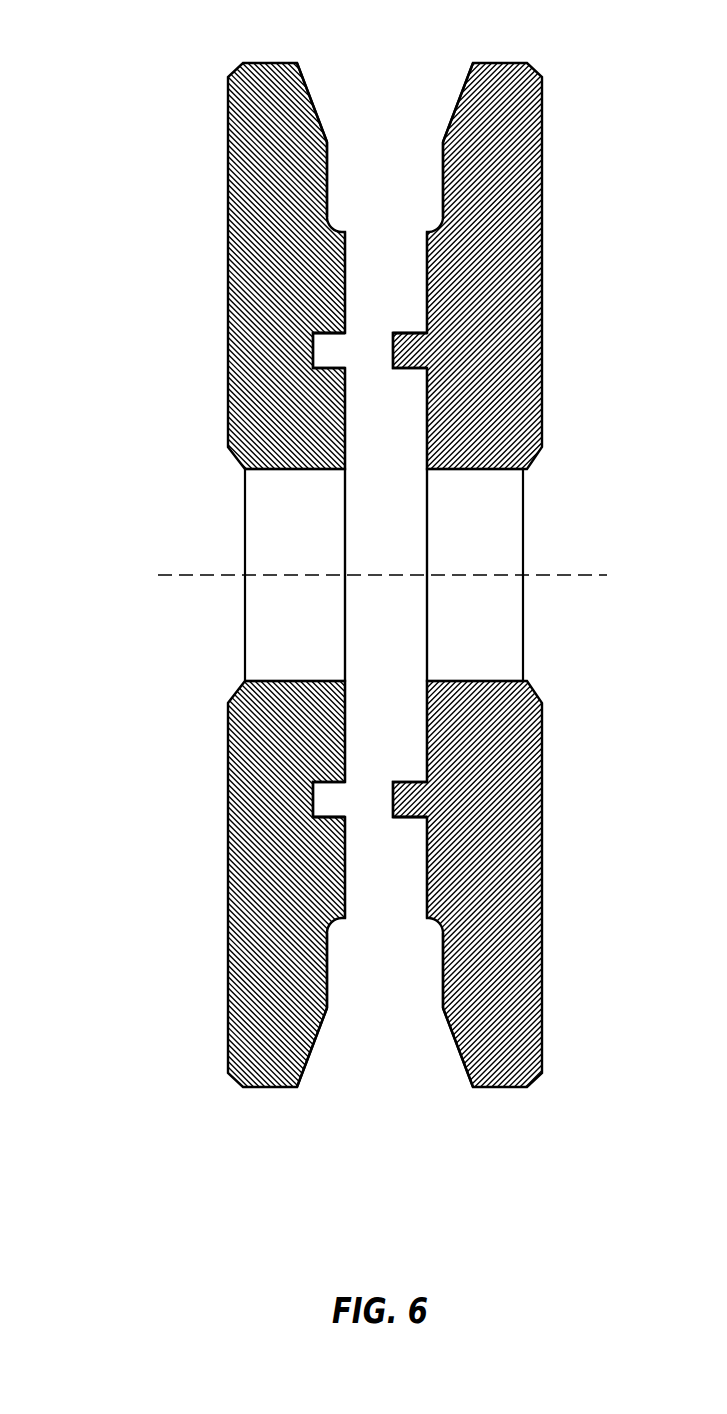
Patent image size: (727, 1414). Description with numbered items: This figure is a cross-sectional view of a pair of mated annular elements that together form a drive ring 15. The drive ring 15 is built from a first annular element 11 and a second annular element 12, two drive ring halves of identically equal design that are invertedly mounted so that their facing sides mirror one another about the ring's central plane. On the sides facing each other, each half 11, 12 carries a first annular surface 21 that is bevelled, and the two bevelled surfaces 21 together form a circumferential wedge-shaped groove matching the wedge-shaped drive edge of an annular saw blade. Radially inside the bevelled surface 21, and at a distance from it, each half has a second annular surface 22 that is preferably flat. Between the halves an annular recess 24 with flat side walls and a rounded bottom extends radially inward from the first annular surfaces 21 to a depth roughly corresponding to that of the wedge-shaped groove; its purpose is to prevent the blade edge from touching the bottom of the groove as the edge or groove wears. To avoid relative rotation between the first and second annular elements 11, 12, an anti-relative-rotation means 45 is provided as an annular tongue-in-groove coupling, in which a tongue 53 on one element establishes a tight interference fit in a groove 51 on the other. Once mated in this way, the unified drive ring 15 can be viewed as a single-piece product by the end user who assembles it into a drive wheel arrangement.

The drive ring 15 is at (130, 220).
The first annular element 11 is at (242, 258).
The second annular element 12 is at (527, 258).
The first annular surface 21 is at (320, 92).
The annular recess 24 is at (340, 192).
The second annular surface 22 is at (348, 250).
The anti-relative-rotation means 45 is at (412, 321).
The tongue 53 is at (322, 352).
The groove 51 is at (394, 366).